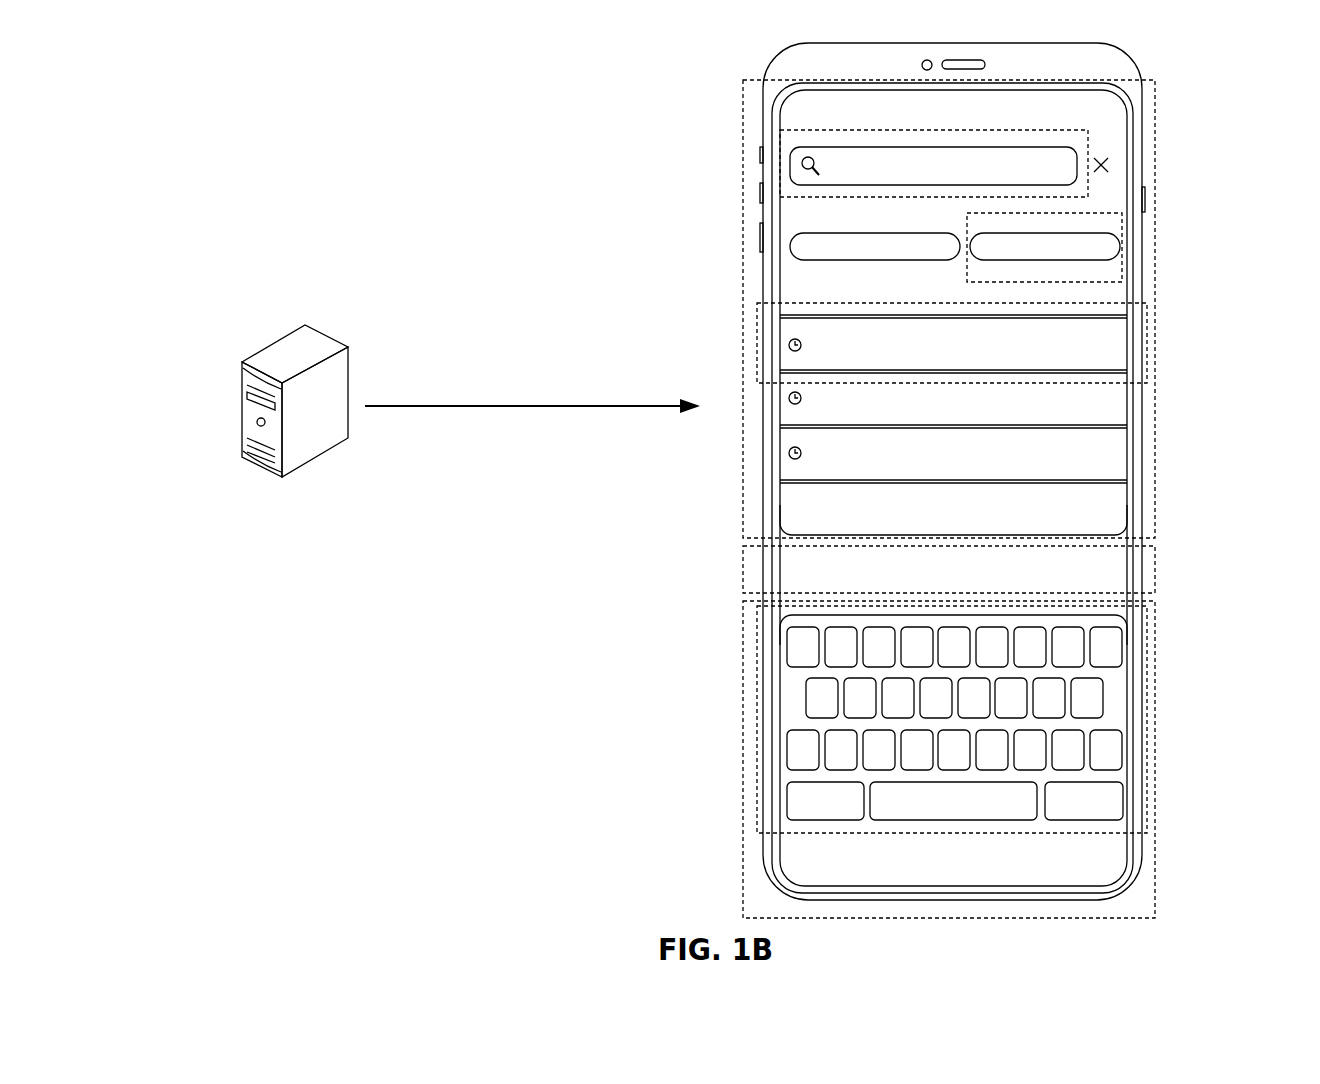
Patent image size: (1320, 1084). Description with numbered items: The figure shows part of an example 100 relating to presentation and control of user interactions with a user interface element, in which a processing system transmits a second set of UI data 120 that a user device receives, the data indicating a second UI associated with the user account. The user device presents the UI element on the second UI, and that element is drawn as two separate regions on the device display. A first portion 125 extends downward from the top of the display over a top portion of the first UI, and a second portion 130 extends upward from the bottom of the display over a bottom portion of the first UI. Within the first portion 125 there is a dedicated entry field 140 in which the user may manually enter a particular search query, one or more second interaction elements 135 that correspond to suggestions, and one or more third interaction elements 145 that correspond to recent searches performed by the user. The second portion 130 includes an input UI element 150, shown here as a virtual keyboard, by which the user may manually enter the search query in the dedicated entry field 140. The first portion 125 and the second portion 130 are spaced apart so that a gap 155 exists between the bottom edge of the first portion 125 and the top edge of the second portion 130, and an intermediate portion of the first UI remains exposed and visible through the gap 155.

The example 100 is at (226, 67).
The second set of UI data 120 is at (532, 368).
The first portion 125 is at (744, 268).
The second portion 130 is at (744, 790).
The second interaction elements 135 is at (1122, 246).
The dedicated entry field 140 is at (1088, 182).
The third interaction elements 145 is at (1147, 337).
The input UI element 150 is at (1148, 640).
The gap 155 is at (744, 578).